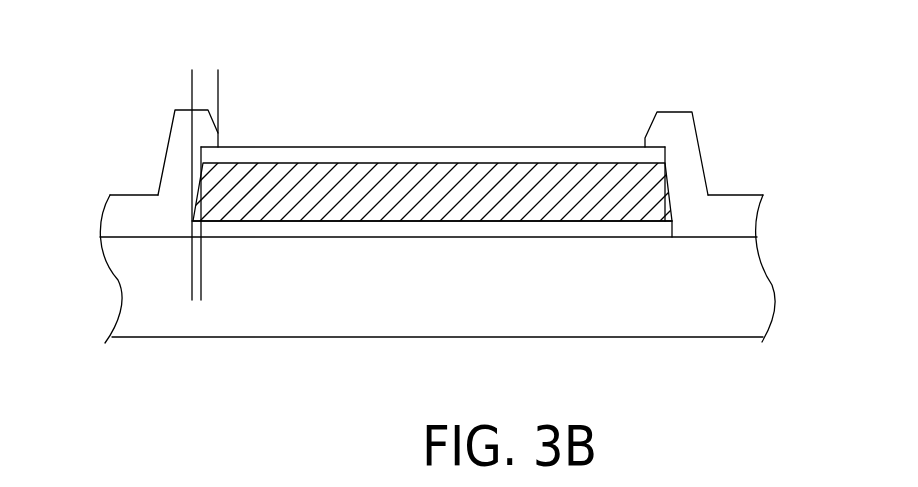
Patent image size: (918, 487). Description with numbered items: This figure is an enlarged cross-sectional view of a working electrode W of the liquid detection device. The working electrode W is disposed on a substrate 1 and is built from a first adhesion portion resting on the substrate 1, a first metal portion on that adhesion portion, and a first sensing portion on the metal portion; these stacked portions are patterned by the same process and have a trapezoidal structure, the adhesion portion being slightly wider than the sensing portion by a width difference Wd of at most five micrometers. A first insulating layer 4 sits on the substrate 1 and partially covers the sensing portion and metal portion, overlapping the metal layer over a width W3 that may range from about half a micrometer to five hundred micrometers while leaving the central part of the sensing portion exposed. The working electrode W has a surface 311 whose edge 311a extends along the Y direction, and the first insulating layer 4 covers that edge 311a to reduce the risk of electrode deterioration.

The substrate 1 is at (742, 268).
The first insulating layer 4 is at (747, 223).
The surface 311 is at (362, 147).
The edge 311a is at (665, 137).
The width of overlapping portion W3 is at (260, 77).
The width difference Wd is at (153, 293).
The working electrode W is at (112, 108).